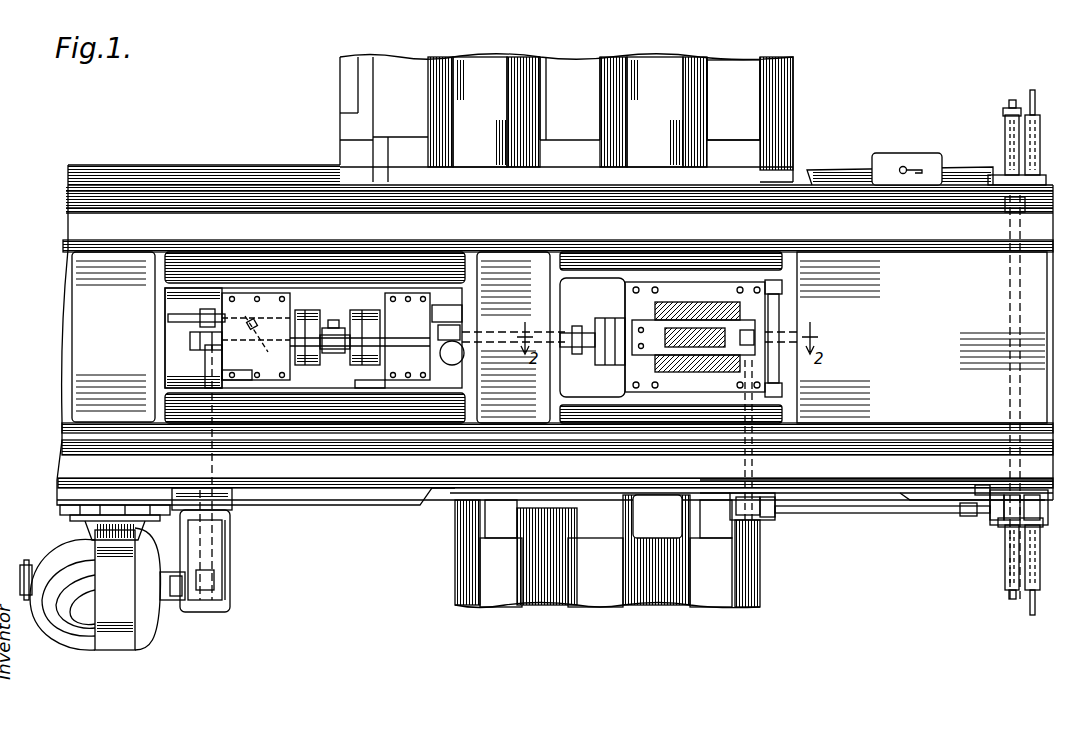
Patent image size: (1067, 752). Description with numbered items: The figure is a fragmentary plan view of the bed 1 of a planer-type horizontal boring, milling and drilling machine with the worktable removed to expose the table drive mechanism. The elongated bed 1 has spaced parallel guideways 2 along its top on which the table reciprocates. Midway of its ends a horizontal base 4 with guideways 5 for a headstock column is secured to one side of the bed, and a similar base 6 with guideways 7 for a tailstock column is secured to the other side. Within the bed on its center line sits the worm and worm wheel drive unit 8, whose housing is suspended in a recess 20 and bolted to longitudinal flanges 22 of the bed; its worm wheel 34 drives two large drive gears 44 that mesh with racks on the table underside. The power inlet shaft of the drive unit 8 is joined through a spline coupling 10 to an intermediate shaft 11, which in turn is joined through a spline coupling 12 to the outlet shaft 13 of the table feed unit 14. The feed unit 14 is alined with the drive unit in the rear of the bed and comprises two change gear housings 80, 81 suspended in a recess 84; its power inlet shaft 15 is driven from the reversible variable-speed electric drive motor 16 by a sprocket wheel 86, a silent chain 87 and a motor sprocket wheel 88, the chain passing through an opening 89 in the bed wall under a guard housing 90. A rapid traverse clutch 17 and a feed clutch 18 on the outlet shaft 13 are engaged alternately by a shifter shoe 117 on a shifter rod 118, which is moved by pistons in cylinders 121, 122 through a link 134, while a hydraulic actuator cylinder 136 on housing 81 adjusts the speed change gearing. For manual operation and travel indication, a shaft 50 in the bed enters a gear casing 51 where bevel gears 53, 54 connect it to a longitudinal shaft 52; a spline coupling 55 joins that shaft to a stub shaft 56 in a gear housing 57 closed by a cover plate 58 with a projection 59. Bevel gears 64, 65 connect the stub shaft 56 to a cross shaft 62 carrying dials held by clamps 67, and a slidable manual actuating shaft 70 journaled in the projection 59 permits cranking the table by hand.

The bed 1 is at (66, 288).
The guideways 2 is at (68, 225).
The base 4 is at (790, 96).
The guideways 5 is at (748, 67).
The base 6 is at (760, 562).
The guideways 7 is at (728, 582).
The worm and worm wheel drive unit 8 is at (610, 309).
The spline coupling 10 is at (592, 345).
The intermediate shaft 11 is at (570, 334).
The spline coupling 12 is at (466, 326).
The outlet shaft 13 is at (438, 335).
The table feed unit 14 is at (336, 277).
The power inlet shaft 15 is at (240, 378).
The electric drive motor 16 is at (160, 630).
The rapid traverse clutch 17 is at (300, 310).
The feed clutch 18 is at (366, 310).
The recess 20 is at (596, 388).
The longitudinal flanges 22 is at (780, 292).
The worm wheel 34 is at (665, 330).
The drive gears 44 is at (680, 306).
The shaft 50 is at (745, 471).
The gear casing 51 is at (776, 514).
The longitudinal shaft 52 is at (885, 500).
The bevel gear 53 is at (765, 495).
The bevel gear 54 is at (760, 535).
The spline coupling 55 is at (966, 516).
The stub shaft 56 is at (992, 520).
The gear housing 57 is at (1032, 500).
The cover plate 58 is at (1027, 208).
The projection 59 is at (1003, 136).
The cross shaft 62 is at (1010, 287).
The bevel gear 64 is at (936, 492).
The bevel gear 65 is at (976, 492).
The clamp 67 is at (1008, 104).
The manual actuating shaft 70 is at (1032, 100).
The change gear housing 80 is at (256, 336).
The change gear housing 81 is at (407, 336).
The recess 84 is at (370, 398).
The sprocket wheel 86 is at (206, 362).
The silent chain 87 is at (225, 522).
The sprocket wheel 88 is at (218, 586).
The opening 89 is at (216, 492).
The guard housing 90 is at (215, 556).
The shifter shoe 117 is at (336, 355).
The shifter rod 118 is at (292, 343).
The cylinder 121 is at (192, 340).
The cylinder 122 is at (195, 317).
The link 134 is at (270, 352).
The hydraulic actuator cylinder 136 is at (432, 312).